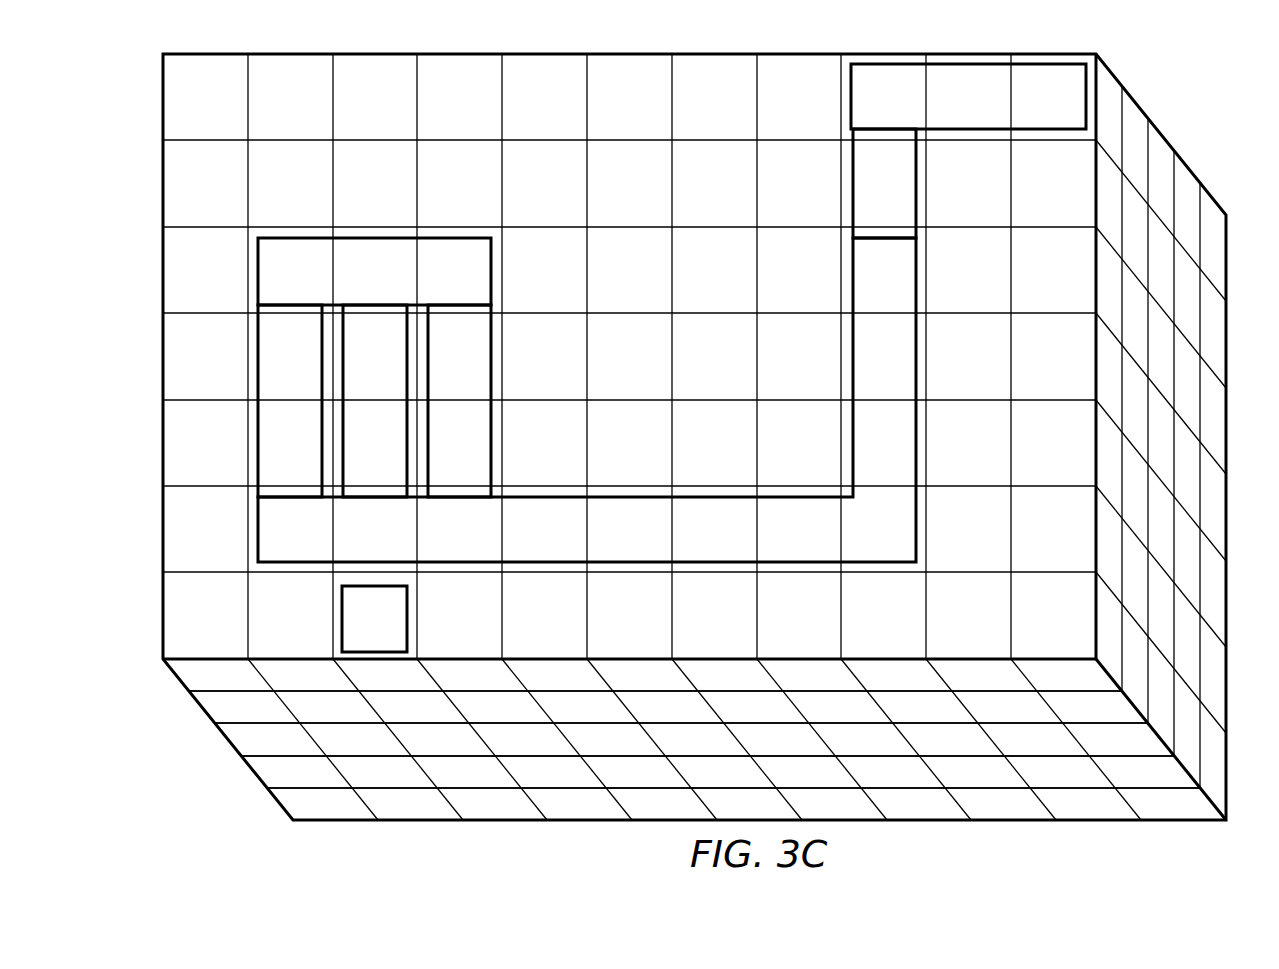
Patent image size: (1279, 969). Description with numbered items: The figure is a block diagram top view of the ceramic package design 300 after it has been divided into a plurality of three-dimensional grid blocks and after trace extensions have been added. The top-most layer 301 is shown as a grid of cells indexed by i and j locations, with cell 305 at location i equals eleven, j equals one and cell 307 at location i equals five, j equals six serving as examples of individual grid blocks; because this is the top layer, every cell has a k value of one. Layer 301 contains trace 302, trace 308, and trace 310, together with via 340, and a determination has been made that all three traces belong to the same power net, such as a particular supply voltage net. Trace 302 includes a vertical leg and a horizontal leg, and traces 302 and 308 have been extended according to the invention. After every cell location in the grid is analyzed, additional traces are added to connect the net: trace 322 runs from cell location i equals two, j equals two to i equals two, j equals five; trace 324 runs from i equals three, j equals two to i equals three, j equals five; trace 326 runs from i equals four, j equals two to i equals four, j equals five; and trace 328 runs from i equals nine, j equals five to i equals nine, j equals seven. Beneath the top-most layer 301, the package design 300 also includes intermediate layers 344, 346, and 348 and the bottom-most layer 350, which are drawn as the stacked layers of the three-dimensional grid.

The ceramic package design 300 is at (1216, 99).
The layer 301 is at (176, 678).
The trace 302 is at (923, 445).
The cell 305 is at (1073, 629).
The cell 307 is at (565, 197).
The trace 308 is at (375, 232).
The trace 310 is at (845, 94).
The trace 322 is at (308, 370).
The trace 324 is at (393, 370).
The trace 326 is at (478, 370).
The trace 328 is at (902, 197).
The via 340 is at (342, 616).
The layer 344 is at (201, 710).
The layer 346 is at (227, 743).
The layer 348 is at (252, 776).
The layer 350 is at (278, 808).